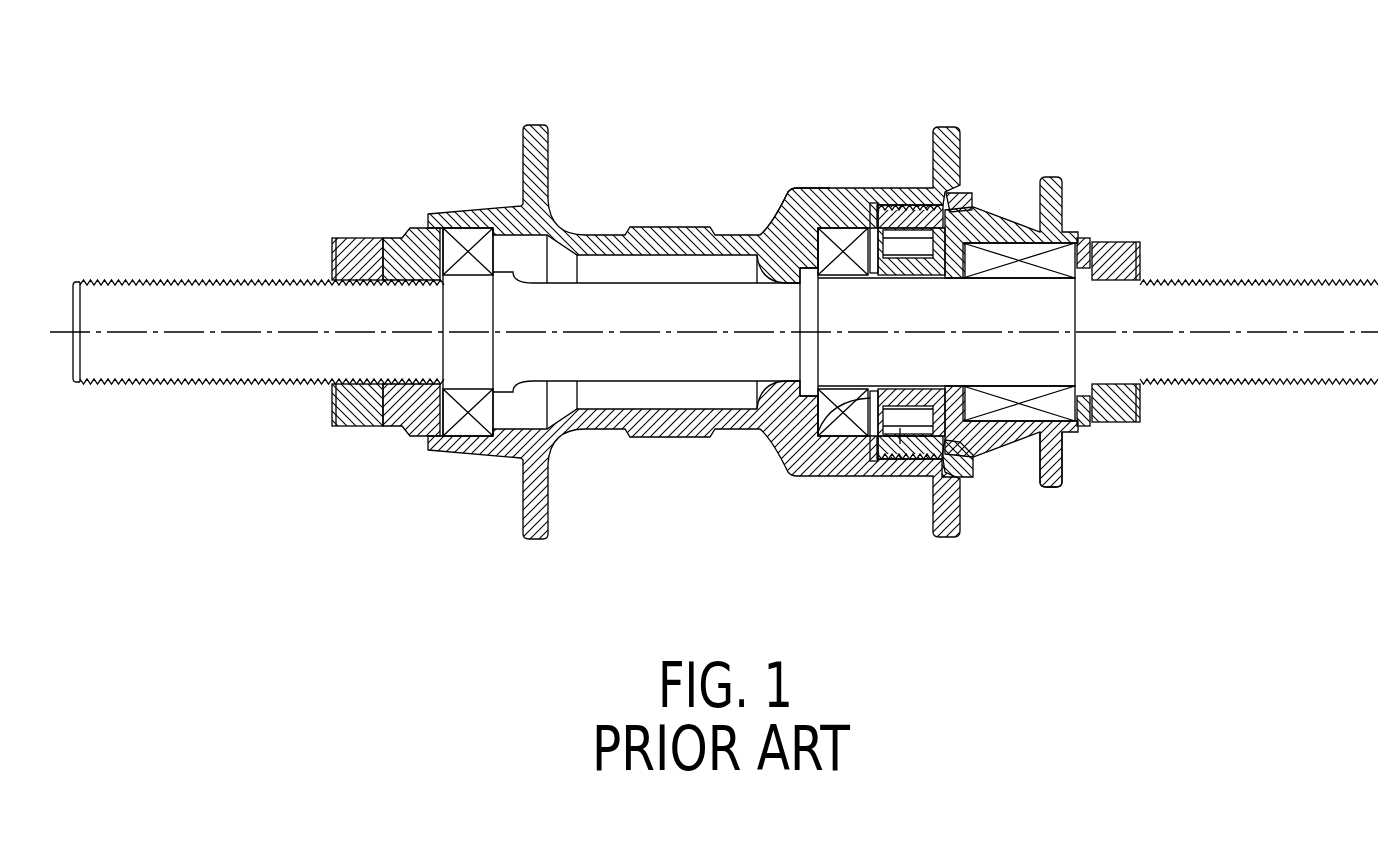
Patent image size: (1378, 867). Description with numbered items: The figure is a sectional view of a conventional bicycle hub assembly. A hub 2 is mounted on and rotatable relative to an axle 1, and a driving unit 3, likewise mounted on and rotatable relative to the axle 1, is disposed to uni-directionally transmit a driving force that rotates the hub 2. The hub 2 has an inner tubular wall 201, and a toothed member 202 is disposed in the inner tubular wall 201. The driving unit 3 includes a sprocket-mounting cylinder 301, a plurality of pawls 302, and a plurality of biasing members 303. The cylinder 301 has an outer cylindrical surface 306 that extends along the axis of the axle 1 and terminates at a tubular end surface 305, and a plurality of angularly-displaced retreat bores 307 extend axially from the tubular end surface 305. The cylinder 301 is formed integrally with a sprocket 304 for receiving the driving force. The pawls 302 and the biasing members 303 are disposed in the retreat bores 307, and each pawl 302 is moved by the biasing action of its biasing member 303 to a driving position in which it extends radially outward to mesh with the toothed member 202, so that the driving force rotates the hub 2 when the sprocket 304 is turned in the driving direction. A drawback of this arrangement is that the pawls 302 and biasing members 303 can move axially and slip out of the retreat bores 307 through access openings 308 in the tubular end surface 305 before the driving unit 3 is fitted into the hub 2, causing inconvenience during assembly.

The axle 1 is at (192, 308).
The hub 2 is at (639, 224).
The driving unit 3 is at (1010, 199).
The inner tubular wall 201 is at (905, 192).
The toothed member 202 is at (930, 195).
The sprocket-mounting cylinder 301 is at (1003, 440).
The pawl 302 is at (900, 427).
The biasing member 303 is at (813, 202).
The sprocket 304 is at (1047, 467).
The tubular end surface 305 is at (857, 398).
The outer cylindrical surface 306 is at (877, 193).
The retreat bore 307 is at (937, 453).
The access opening 308 is at (860, 430).